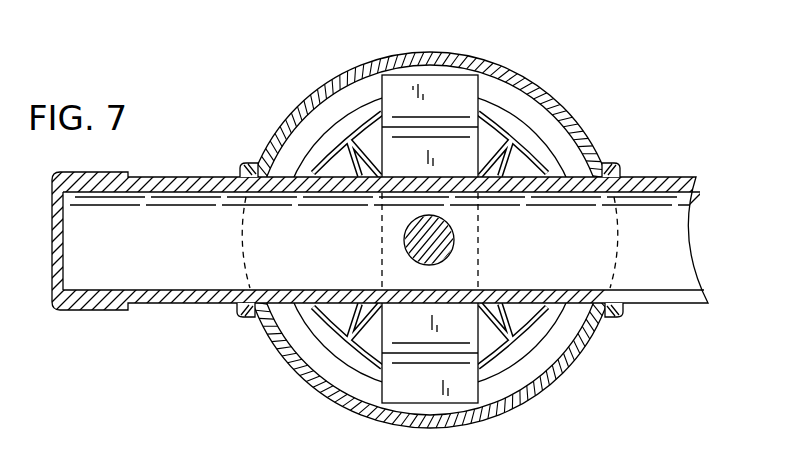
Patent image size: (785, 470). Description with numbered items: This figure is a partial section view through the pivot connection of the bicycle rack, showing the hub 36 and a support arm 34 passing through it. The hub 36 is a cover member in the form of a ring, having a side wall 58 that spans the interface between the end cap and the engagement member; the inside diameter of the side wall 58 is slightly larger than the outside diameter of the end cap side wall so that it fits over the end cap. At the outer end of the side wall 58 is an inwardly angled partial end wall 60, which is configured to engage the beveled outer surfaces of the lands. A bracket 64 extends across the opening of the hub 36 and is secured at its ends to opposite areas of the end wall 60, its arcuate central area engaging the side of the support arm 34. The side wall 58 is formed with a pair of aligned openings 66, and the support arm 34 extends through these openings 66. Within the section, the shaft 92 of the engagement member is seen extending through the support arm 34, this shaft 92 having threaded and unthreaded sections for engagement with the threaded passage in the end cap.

The support arm 34 is at (168, 311).
The hub member 36 is at (555, 86).
The side wall 58 is at (337, 82).
The partial end wall 60 is at (308, 133).
The bracket 64 is at (480, 92).
The aligned openings 66 is at (240, 181).
The shaft 92 is at (453, 228).